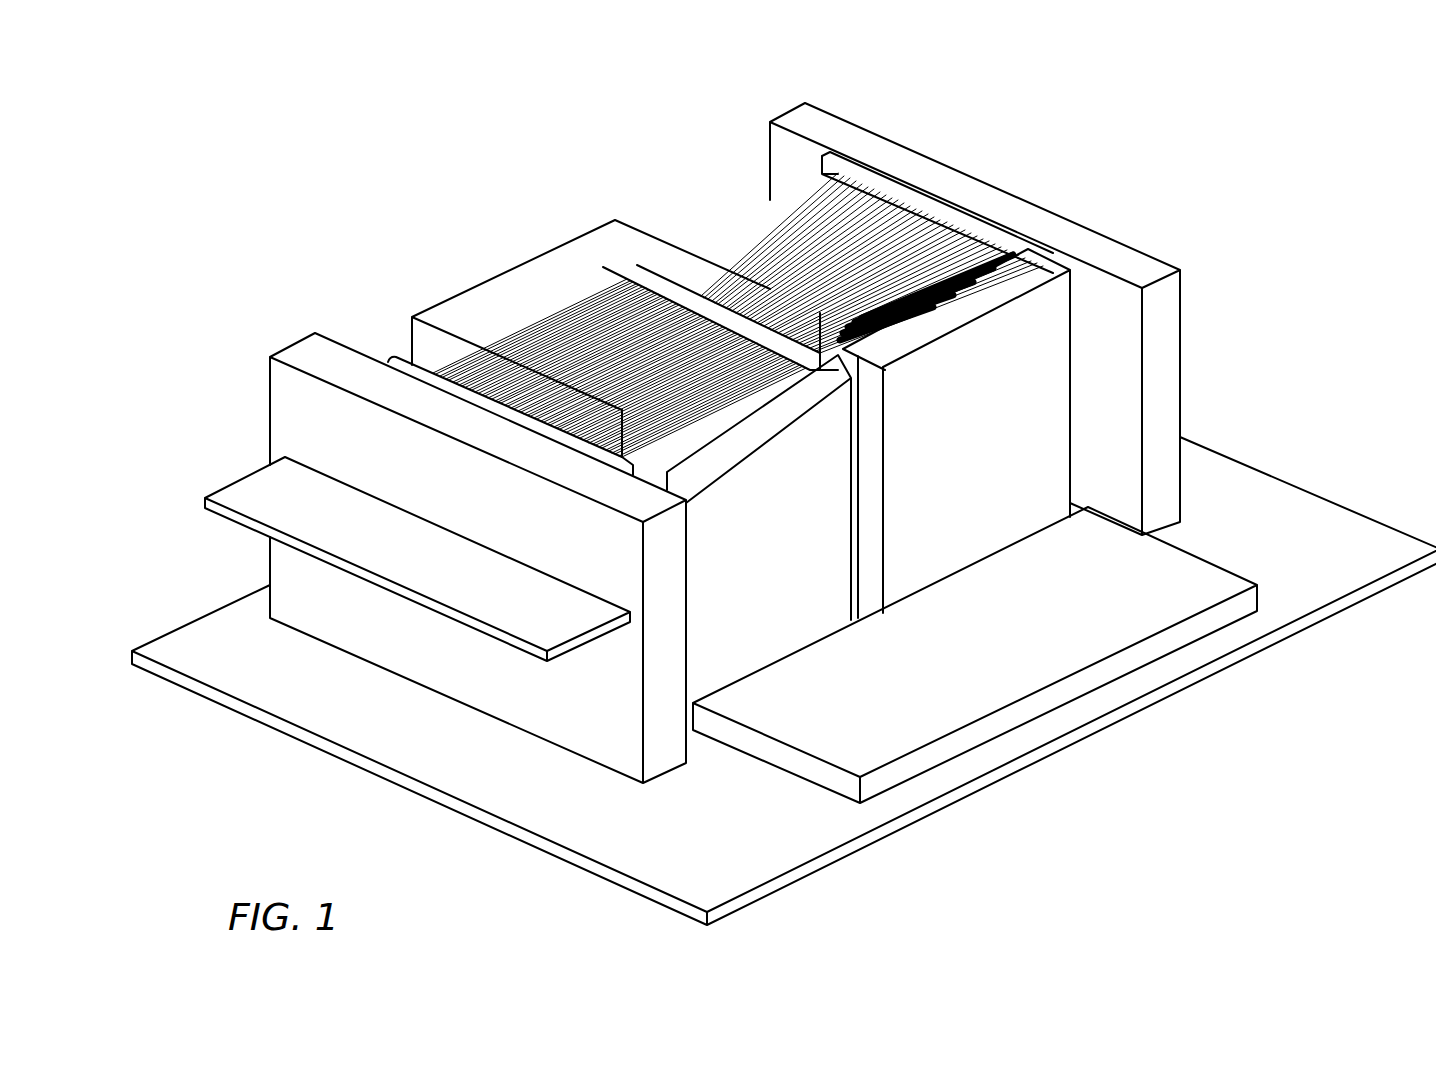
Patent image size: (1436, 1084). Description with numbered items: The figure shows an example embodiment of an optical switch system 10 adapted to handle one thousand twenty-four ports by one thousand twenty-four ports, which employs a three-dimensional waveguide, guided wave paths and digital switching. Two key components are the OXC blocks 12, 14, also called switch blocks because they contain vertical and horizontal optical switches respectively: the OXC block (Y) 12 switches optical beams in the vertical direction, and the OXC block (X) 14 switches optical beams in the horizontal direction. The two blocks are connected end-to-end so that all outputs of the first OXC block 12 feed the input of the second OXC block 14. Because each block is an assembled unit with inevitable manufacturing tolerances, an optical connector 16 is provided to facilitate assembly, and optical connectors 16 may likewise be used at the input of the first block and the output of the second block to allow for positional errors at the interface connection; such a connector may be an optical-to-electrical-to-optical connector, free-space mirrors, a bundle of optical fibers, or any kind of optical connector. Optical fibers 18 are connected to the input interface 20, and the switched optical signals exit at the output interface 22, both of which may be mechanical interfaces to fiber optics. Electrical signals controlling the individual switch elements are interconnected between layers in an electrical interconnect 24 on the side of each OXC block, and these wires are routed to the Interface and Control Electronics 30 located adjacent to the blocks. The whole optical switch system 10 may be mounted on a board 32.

The optical switch system 10 is at (1000, 104).
The OXC block (Y) 12 is at (519, 328).
The OXC block (X) 14 is at (696, 236).
The optical connector 16 is at (390, 363).
The optical fibers 18 is at (238, 529).
The input interface 20 is at (266, 404).
The output interface 22 is at (1162, 320).
The electrical interconnect 24 is at (784, 548).
The Interface and Control Electronics 30 is at (932, 762).
The board 32 is at (722, 876).